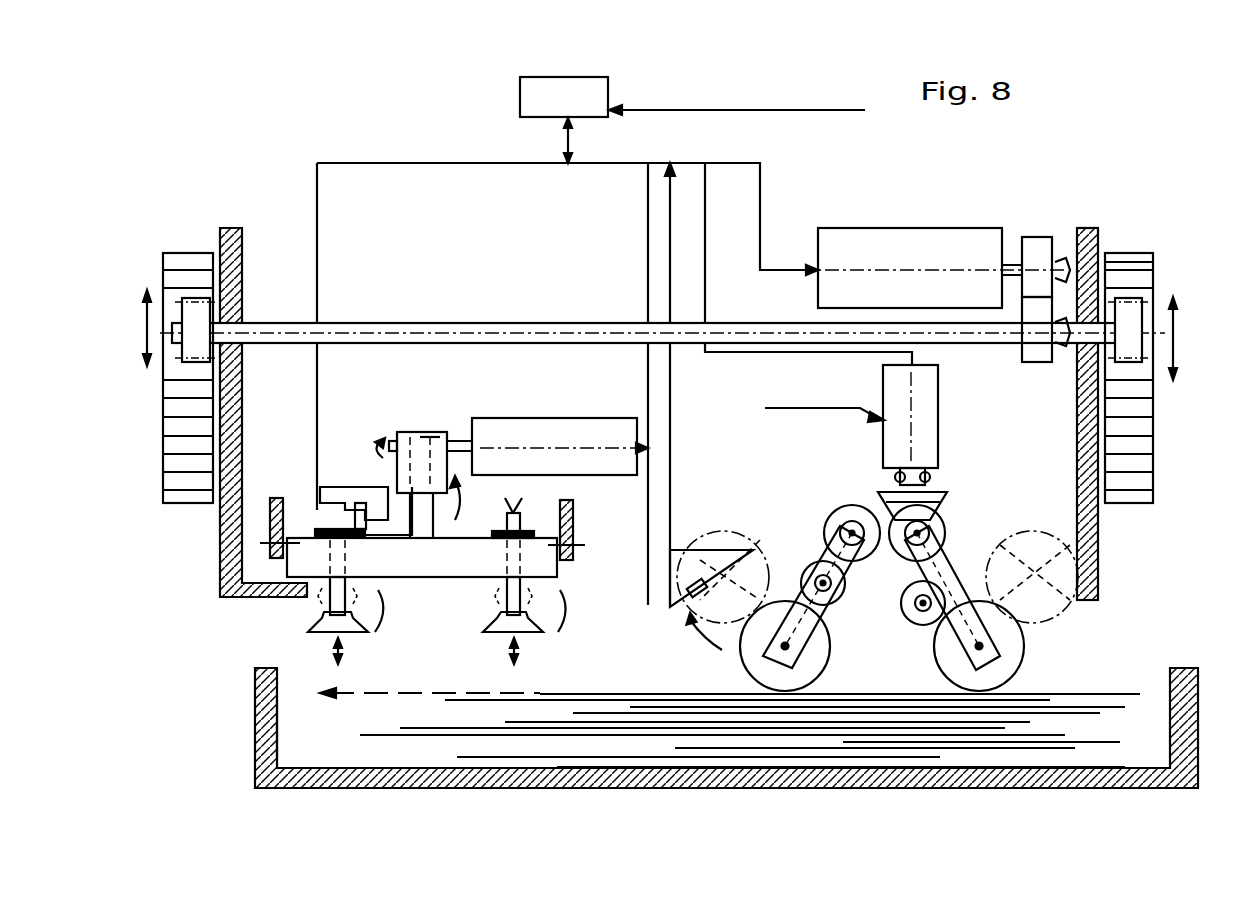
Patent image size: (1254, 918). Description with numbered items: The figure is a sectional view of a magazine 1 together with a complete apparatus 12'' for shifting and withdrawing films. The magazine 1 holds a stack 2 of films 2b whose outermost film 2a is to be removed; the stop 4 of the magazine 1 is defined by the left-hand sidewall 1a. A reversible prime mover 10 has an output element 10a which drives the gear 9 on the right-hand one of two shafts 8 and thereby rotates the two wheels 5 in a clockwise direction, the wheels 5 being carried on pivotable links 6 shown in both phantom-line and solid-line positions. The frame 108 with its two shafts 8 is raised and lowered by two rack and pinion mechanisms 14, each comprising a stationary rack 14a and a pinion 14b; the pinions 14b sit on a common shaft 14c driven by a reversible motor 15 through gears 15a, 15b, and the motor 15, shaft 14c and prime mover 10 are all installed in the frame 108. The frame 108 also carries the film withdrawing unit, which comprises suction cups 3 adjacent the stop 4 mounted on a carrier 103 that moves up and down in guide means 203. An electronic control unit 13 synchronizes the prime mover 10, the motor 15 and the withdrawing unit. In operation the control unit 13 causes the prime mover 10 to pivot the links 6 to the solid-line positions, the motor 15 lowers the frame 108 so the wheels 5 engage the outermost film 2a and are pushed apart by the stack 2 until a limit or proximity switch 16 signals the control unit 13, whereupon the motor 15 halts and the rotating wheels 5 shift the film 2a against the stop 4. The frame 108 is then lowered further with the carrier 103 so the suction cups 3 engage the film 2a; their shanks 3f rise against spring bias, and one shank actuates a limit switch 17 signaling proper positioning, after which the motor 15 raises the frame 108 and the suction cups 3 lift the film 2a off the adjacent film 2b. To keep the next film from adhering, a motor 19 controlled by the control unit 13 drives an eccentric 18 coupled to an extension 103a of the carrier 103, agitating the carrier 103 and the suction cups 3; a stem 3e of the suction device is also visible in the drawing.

The magazine 1 is at (805, 795).
The left-hand sidewall 1a is at (256, 730).
The stack 2 is at (640, 688).
The outermost film 2a is at (1057, 694).
The films 2b is at (455, 760).
The suction cups 3 is at (487, 622).
The suction cup stem 3e is at (350, 592).
The shanks 3f is at (520, 520).
The stop 4 is at (278, 730).
The wheels 5 is at (830, 662).
The links 6 is at (925, 643).
The shafts 8 is at (848, 512).
The gear 9 is at (873, 593).
The reversible prime mover 10 is at (925, 425).
The output element 10a is at (935, 482).
The apparatus 12'' is at (877, 544).
The electronic control unit 13 is at (614, 342).
The rack and pinion mechanisms 14 is at (192, 242).
The stationary rack 14a is at (1153, 262).
The pinion 14b is at (1130, 345).
The common shaft 14c is at (390, 325).
The motor 15 is at (850, 250).
The gear 15a is at (1040, 362).
The gear 15b is at (1035, 237).
The limit switch 16 is at (718, 555).
The limit switch 17 is at (355, 522).
The eccentric 18 is at (420, 432).
The motor 19 is at (545, 418).
The carrier 103 is at (556, 573).
The extension 103a is at (430, 437).
The frame 108 is at (1104, 566).
The guide means 203 is at (282, 500).